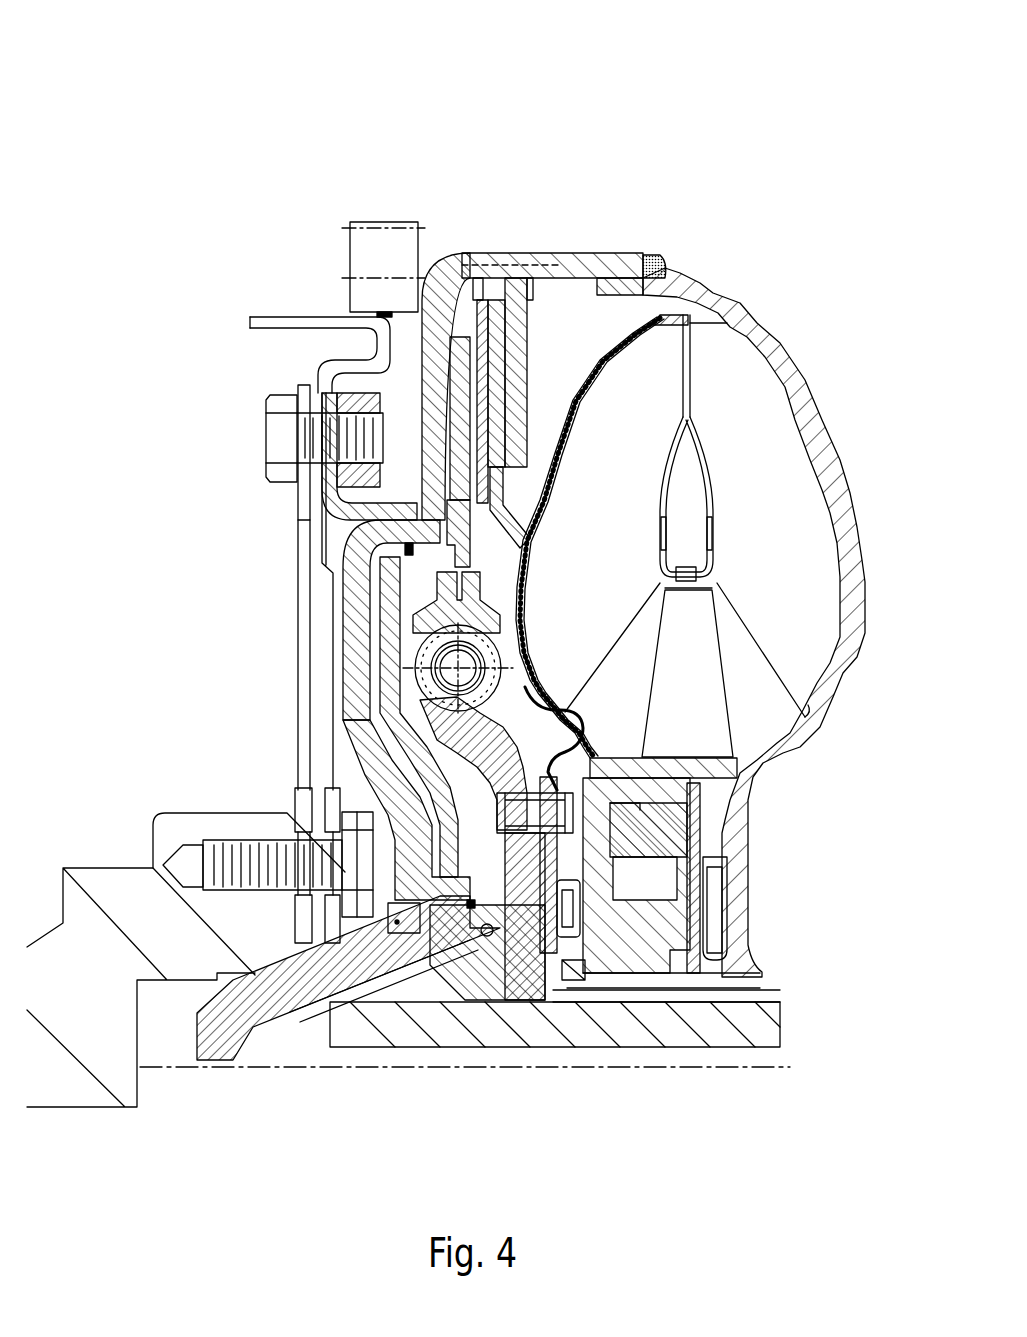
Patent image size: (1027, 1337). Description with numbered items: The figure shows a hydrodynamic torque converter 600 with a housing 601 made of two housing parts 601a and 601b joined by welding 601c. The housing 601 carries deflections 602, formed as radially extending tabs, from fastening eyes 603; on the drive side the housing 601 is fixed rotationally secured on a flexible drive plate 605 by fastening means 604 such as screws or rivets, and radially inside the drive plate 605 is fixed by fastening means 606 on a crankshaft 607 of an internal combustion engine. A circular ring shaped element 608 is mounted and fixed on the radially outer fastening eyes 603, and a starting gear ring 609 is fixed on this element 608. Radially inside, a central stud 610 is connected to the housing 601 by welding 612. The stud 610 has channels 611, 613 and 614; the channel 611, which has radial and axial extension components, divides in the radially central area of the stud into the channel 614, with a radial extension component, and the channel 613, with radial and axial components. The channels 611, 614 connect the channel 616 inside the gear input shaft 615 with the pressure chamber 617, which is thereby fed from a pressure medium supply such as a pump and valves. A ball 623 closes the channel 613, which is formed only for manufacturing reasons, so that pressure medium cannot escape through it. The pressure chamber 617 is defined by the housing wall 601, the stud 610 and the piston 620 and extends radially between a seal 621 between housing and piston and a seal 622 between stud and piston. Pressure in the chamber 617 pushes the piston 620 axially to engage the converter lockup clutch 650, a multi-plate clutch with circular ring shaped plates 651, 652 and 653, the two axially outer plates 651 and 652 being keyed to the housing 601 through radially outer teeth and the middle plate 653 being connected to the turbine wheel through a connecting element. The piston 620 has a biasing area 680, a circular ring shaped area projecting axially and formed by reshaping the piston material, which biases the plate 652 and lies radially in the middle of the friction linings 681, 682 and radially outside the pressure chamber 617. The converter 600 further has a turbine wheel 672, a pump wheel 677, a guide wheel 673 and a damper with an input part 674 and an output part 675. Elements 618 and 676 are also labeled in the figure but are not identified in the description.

The hydrodynamic torque converter 600 is at (690, 105).
The converter lockup clutch 650 is at (500, 225).
The starting gear ring 609 is at (390, 222).
The circular ring shaped element 608 is at (250, 323).
The fastening eyes 603 is at (305, 390).
The fastening means 604 is at (268, 440).
The deflections 602 is at (330, 492).
The flexible drive plate 605 is at (300, 538).
The seal 621 is at (335, 590).
The plate 652 is at (478, 292).
The housing 601 is at (560, 258).
The housing part 601a is at (640, 262).
The housing part 601b is at (800, 352).
The welding 601c is at (658, 252).
The biasing area 680 is at (450, 370).
The plate 651 is at (520, 340).
The friction lining 681 is at (500, 385).
The friction lining 682 is at (485, 440).
The plate 653 is at (495, 490).
The turbine wheel 672 is at (615, 572).
The pump wheel 677 is at (807, 547).
The guide wheel 673 is at (702, 684).
The damper input part 674 is at (548, 735).
The roller 676 is at (505, 648).
The pressure chamber 617 is at (358, 630).
The housing part 618 is at (362, 665).
The piston 620 is at (383, 693).
The damper output part 675 is at (482, 762).
The seal 622 is at (470, 898).
The channel 614 is at (415, 915).
The ball 623 is at (480, 985).
The channel 611 is at (290, 1030).
The welding 612 is at (425, 945).
The channel 613 is at (465, 965).
The central stud 610 is at (205, 1062).
The crankshaft 607 is at (185, 820).
The fastening means 606 is at (262, 840).
The gear input shaft 615 is at (580, 1033).
The channel 616 is at (660, 1057).